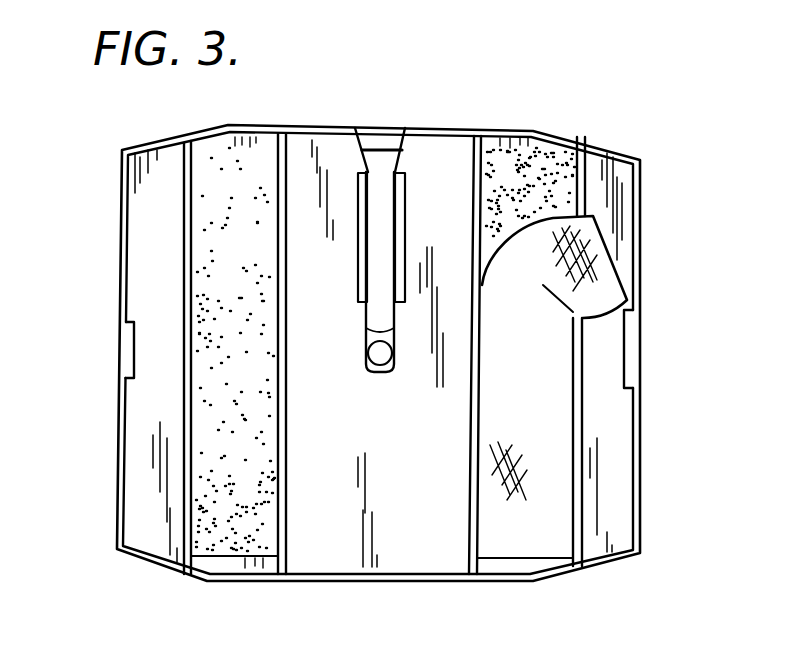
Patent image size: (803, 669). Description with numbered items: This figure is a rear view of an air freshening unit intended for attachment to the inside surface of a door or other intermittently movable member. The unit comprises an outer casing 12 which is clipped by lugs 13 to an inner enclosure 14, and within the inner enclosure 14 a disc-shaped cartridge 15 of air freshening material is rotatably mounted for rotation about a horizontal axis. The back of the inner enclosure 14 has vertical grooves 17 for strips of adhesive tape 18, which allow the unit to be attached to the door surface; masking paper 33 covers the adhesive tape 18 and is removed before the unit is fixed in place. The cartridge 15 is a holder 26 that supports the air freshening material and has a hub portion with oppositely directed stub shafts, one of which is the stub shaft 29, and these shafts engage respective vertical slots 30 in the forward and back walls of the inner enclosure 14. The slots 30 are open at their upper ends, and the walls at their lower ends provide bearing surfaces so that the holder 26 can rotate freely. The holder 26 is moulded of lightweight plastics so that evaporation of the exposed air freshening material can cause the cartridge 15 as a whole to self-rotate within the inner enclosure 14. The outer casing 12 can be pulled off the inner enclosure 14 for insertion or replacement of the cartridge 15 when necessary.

The outer casing 12 is at (642, 222).
The lugs 13 is at (123, 350).
The inner enclosure 14 is at (150, 251).
The cartridge 15 is at (393, 143).
The vertical grooves 17 is at (185, 210).
The adhesive tape 18 is at (207, 170).
The holder 26 is at (380, 170).
The stub shaft 29 is at (366, 356).
The vertical slots 30 is at (385, 197).
The masking paper 33 is at (548, 457).